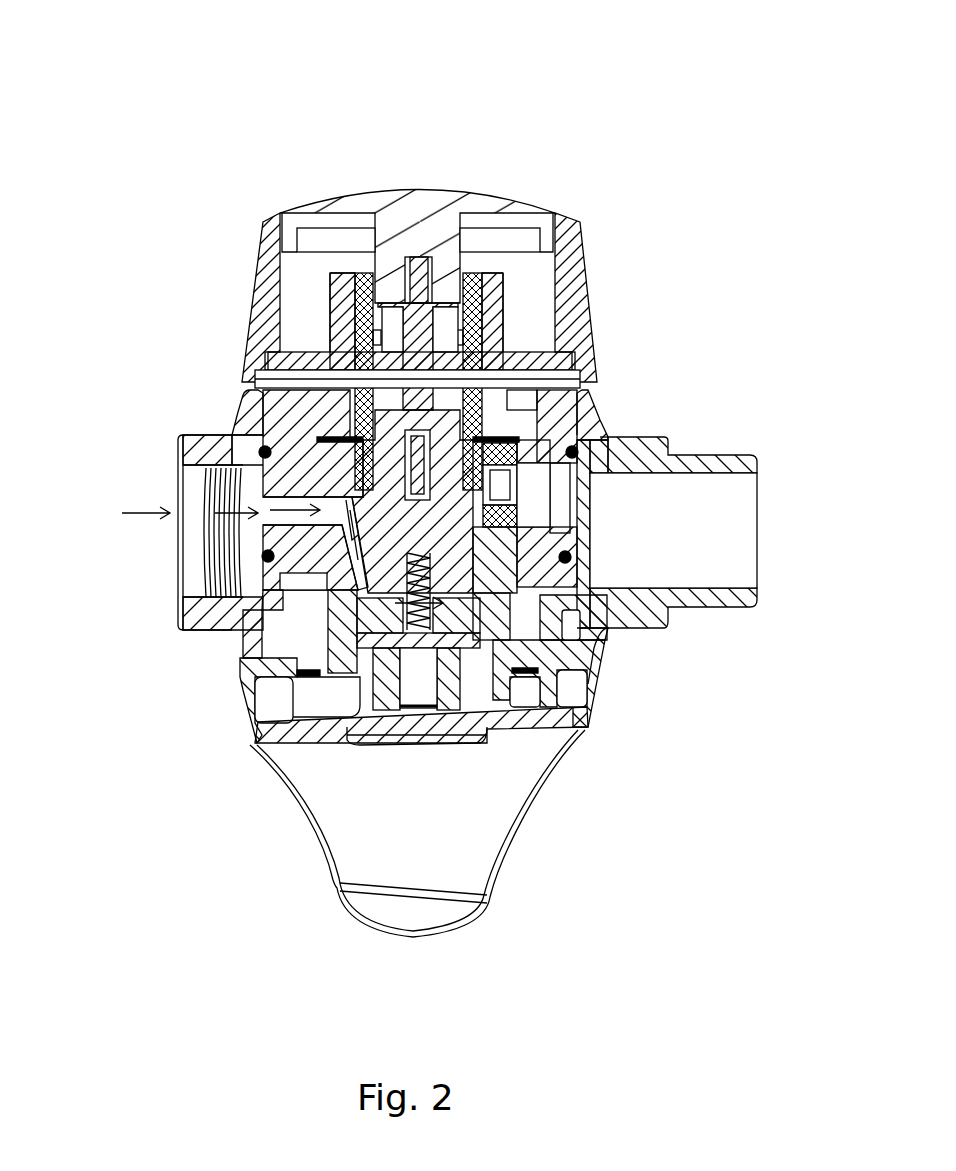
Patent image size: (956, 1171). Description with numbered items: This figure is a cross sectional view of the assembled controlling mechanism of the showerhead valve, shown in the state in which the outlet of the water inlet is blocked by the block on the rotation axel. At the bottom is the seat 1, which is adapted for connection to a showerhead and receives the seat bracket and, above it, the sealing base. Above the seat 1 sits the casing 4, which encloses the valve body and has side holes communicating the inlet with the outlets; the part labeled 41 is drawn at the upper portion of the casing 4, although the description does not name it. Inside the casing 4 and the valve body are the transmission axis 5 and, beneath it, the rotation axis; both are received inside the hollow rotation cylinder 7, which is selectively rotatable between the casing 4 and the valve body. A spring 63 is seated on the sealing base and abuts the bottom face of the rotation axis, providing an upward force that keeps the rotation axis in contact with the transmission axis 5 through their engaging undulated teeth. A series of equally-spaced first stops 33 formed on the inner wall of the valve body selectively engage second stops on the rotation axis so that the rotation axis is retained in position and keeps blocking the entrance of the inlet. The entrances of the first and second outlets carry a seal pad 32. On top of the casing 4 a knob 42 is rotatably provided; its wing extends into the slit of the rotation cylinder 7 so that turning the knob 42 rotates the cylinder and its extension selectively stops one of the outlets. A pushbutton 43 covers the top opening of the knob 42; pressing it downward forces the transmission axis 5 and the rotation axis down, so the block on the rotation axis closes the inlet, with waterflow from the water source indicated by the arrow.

The seat 1 is at (473, 833).
The casing 4 is at (621, 447).
The transmission axis 5 is at (263, 355).
The rotation cylinder 7 is at (490, 330).
The seal pad 32 is at (530, 513).
The first stops 33 is at (470, 528).
The body upper flange 41 is at (240, 408).
The knob 42 is at (243, 305).
The pushbutton 43 is at (417, 205).
The spring 63 is at (377, 617).